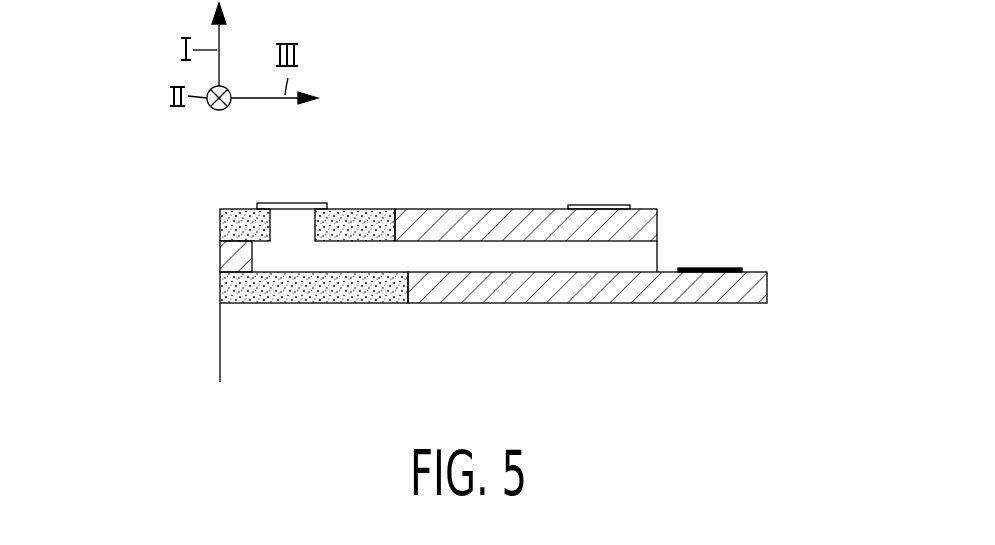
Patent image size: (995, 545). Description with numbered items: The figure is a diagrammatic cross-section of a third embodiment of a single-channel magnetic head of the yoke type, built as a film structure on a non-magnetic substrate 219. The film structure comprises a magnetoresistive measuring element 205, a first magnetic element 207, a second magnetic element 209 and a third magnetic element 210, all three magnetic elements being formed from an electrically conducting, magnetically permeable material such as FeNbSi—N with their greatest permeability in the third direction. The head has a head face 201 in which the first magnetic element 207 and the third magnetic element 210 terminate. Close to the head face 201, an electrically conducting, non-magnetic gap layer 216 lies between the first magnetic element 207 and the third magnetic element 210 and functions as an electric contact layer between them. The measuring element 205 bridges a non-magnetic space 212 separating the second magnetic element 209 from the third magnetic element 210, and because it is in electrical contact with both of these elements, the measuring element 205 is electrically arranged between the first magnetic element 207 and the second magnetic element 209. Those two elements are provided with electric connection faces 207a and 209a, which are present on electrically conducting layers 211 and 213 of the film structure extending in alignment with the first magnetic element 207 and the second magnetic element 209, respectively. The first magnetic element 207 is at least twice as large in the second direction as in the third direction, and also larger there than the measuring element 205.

The head face 201 is at (220, 287).
The magnetoresistive measuring element 205 is at (289, 203).
The first magnetic element 207 is at (365, 293).
The electric connection face 207a is at (706, 260).
The second magnetic element 209 is at (363, 222).
The electric connection face 209a is at (589, 206).
The third magnetic element 210 is at (242, 222).
The electrically conducting layer 211 is at (611, 290).
The non-magnetic space 212 is at (291, 229).
The electrically conducting layer 213 is at (471, 222).
The non-magnetic gap layer 216 is at (220, 241).
The non-magnetic substrate 219 is at (237, 344).